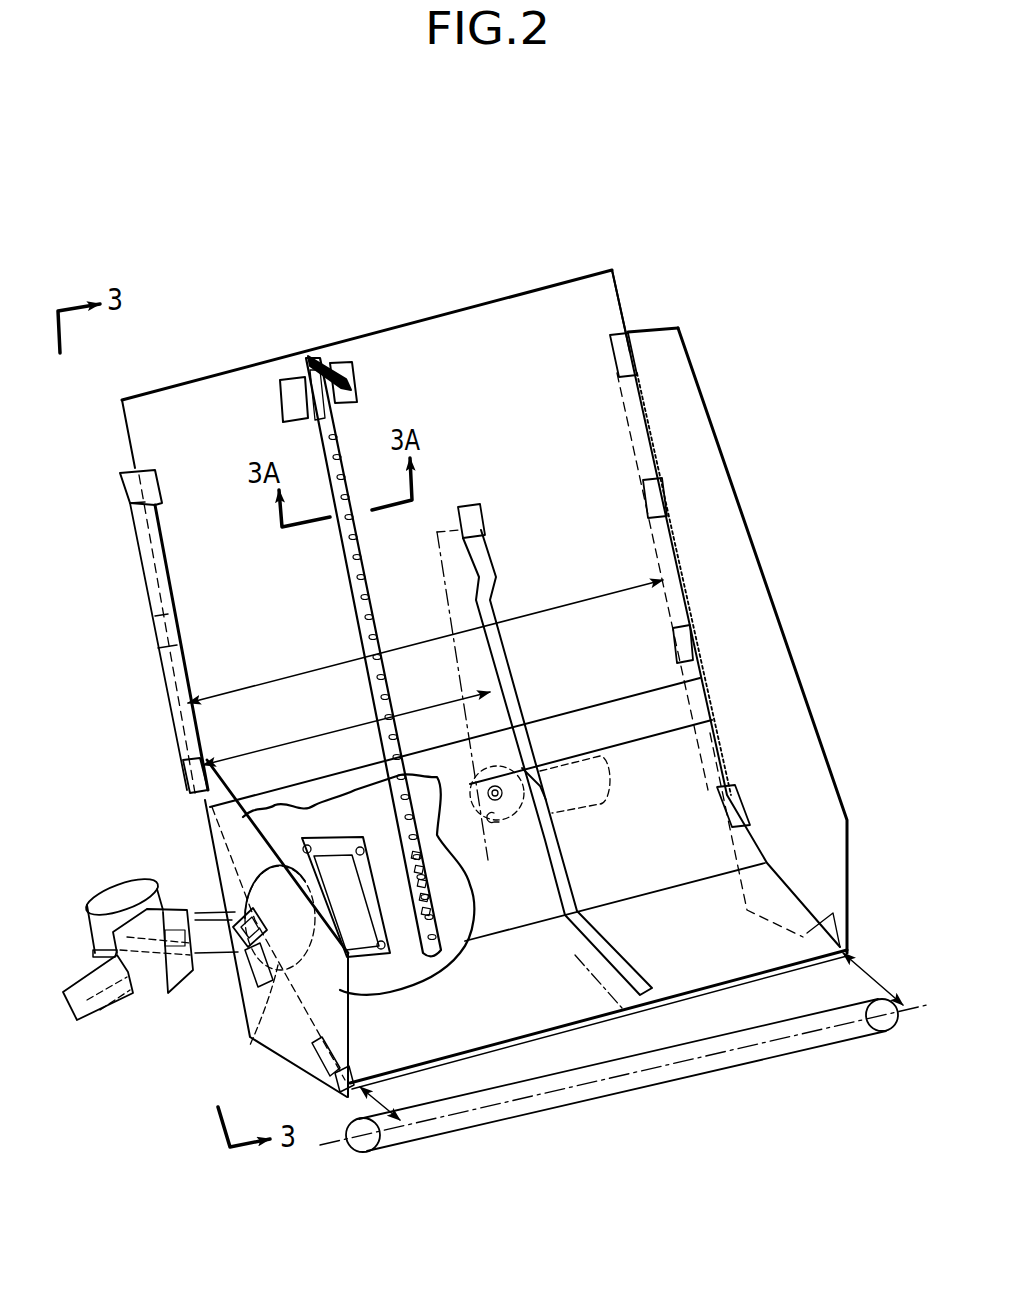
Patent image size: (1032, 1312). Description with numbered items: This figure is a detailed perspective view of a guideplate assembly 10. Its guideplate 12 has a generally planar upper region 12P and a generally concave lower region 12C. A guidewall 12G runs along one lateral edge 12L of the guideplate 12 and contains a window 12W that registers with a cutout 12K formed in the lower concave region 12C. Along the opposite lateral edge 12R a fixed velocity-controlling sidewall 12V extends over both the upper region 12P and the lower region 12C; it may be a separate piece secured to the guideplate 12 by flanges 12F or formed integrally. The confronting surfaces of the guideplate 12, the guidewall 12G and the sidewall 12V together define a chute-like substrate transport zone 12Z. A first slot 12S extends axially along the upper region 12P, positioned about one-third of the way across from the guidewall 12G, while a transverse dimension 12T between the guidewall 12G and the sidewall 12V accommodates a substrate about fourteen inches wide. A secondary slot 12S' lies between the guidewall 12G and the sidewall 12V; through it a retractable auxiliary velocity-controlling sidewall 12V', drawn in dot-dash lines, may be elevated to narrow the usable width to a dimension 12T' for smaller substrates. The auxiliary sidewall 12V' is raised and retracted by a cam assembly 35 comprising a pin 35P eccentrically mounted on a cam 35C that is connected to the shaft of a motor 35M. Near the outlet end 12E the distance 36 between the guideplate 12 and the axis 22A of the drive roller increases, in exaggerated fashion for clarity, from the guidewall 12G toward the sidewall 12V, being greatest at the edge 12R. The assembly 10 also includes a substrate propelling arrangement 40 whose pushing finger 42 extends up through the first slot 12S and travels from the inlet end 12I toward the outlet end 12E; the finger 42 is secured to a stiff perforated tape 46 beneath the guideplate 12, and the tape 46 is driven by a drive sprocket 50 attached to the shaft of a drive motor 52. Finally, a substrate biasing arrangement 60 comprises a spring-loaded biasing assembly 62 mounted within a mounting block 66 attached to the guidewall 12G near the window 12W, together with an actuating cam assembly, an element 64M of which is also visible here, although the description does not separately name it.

The guideplate assembly 10 is at (584, 220).
The guideplate 12 is at (452, 310).
The planar upper region 12P is at (553, 421).
The substrate transport zone 12Z is at (493, 326).
The lateral edge 12R is at (621, 292).
The velocity-controlling sidewall 12V is at (737, 640).
The flanges 12F is at (633, 353).
The lateral edge 12L is at (126, 437).
The guidewall 12G is at (172, 680).
The inlet end 12I is at (305, 341).
The pushing finger 42 is at (330, 364).
The first slot 12S is at (373, 657).
The perforated tape 46 is at (348, 574).
The secondary slot 12S' is at (555, 756).
The auxiliary velocity-controlling sidewall 12V' is at (436, 695).
The transverse dimension 12T is at (425, 633).
The narrowed transverse dimension 12T' is at (346, 728).
The cam assembly 35 is at (586, 735).
The motor 35M is at (597, 795).
The cam 35C is at (465, 748).
The pin 35P is at (493, 827).
The concave lower region 12C is at (668, 874).
The substrate propelling arrangement 40 is at (487, 985).
The outlet end 12E is at (312, 1085).
The distance 36 is at (375, 1103).
The axis of drive roller 22A is at (338, 1146).
The drive sprocket 50 is at (402, 912).
The window 12W is at (240, 898).
The drive motor 52 is at (262, 1040).
The cutout 12K is at (233, 958).
The substrate biasing arrangement 60 is at (123, 862).
The drive motor 64M is at (121, 891).
The mounting block 66 is at (160, 993).
The spring-loaded biasing assembly 62 is at (107, 1013).